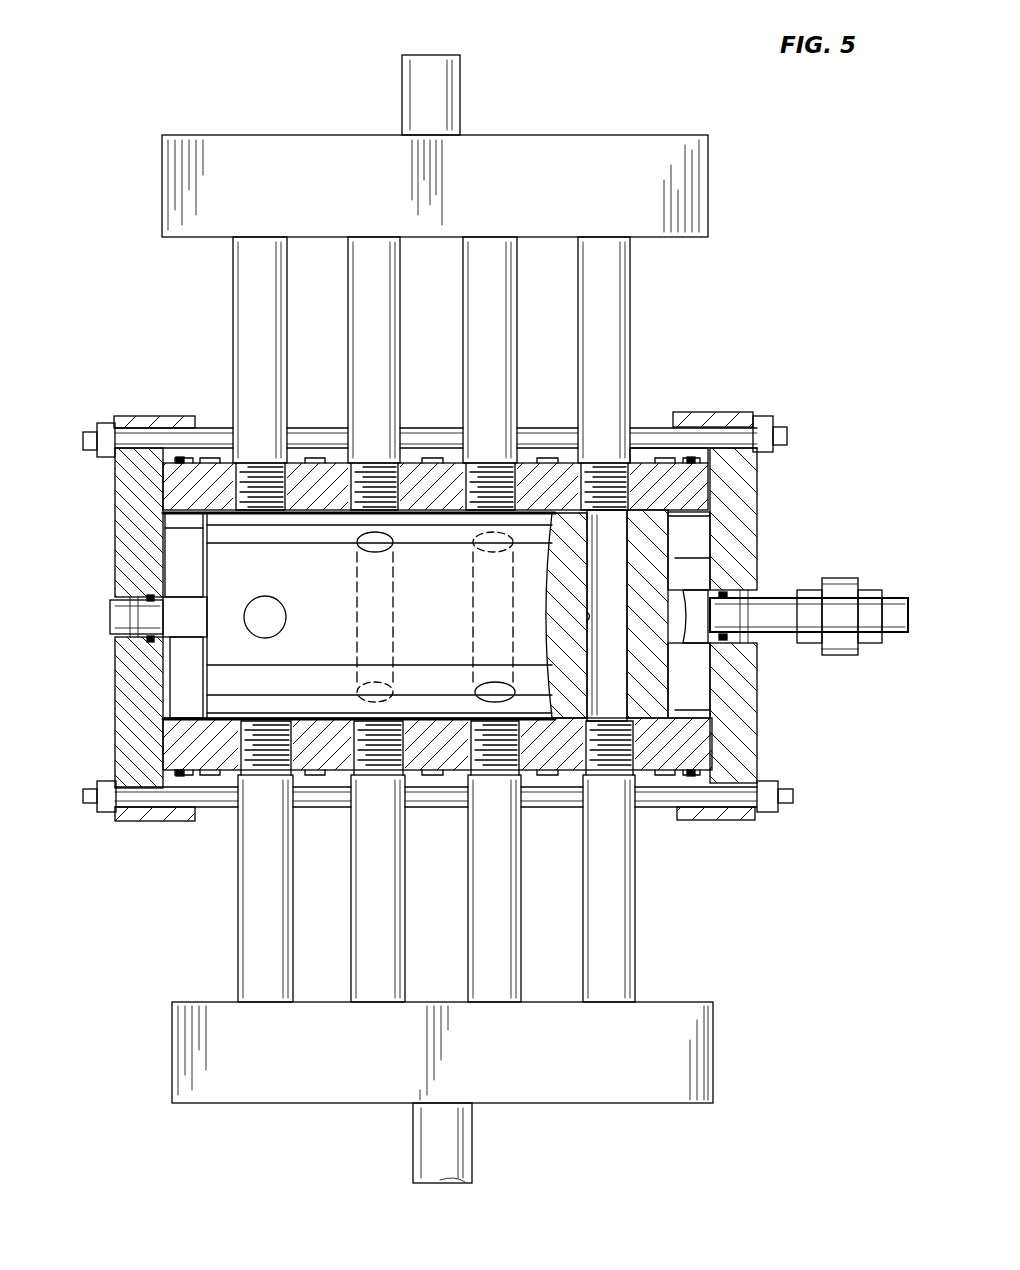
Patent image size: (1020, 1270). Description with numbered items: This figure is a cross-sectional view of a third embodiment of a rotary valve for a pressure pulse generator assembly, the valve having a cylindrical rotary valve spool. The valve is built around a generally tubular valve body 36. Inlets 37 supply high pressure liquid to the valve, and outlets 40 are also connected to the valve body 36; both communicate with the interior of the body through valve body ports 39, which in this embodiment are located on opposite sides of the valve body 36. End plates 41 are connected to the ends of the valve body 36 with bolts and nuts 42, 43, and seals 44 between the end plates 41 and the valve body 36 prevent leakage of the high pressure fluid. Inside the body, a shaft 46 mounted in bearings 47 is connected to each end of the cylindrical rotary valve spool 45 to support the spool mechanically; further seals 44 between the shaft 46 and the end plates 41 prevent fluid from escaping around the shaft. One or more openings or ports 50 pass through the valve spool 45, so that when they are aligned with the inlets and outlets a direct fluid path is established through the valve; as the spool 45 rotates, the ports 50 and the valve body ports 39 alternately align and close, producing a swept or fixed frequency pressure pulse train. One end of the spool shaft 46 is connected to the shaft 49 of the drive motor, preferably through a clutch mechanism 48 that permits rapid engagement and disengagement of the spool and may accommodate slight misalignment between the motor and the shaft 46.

The valve body 36 is at (700, 498).
The inlets 37 is at (713, 1068).
The valve body ports 39 is at (363, 517).
The outlets 40 is at (708, 175).
The end plates 41 is at (115, 745).
The bolts 42 is at (90, 450).
The nuts 43 is at (110, 422).
The seals 44 is at (180, 457).
The rotary valve spool 45 is at (223, 562).
The shaft 46 is at (112, 620).
The bearings 47 is at (123, 590).
The clutch mechanism 48 is at (848, 660).
The drive motor shaft 49 is at (905, 635).
The ports 50 is at (285, 612).